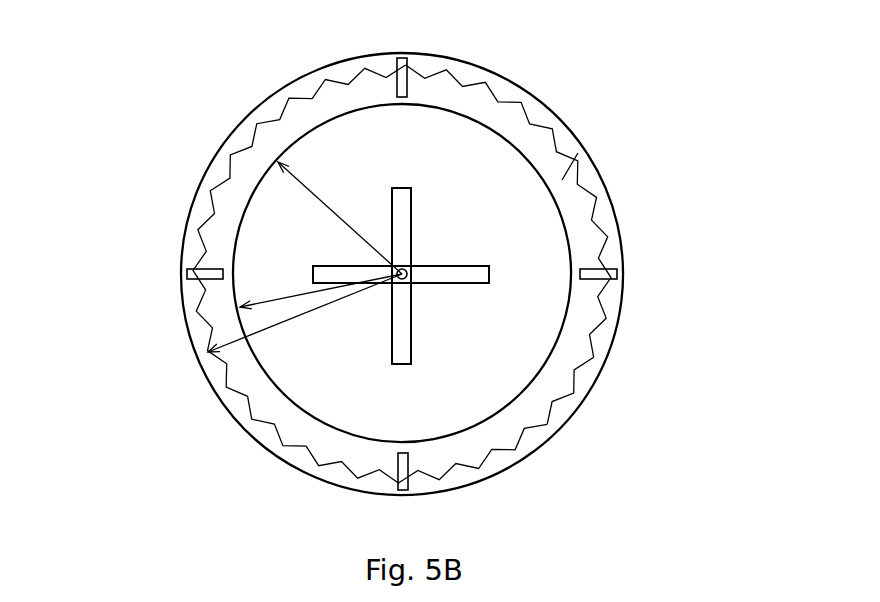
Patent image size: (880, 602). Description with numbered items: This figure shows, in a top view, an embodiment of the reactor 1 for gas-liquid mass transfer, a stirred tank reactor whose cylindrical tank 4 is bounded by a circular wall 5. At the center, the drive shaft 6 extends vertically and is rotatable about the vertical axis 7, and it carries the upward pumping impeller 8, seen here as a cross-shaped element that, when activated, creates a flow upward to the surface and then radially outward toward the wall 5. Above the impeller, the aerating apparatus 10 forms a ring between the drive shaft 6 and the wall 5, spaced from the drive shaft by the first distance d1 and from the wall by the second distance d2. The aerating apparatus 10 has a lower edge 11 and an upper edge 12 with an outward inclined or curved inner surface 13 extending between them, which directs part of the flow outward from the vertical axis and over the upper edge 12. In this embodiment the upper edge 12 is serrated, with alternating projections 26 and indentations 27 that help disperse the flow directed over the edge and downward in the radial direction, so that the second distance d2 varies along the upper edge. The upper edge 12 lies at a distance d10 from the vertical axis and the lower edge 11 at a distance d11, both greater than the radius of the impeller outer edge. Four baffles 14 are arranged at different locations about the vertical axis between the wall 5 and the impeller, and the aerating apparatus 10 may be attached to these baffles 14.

The reactor 1 is at (157, 108).
The tank 4 is at (277, 92).
The wall 5 is at (200, 183).
The drive shaft 6 is at (404, 270).
The vertical axis 7 is at (408, 272).
The upward pumping impeller 8 is at (477, 265).
The aerating apparatus 10 is at (583, 147).
The lower edge 11 is at (360, 435).
The upper edge 12 is at (340, 486).
The inner surface 13 is at (383, 450).
The baffles 14 is at (402, 62).
The projections 26 is at (588, 387).
The indentations 27 is at (612, 333).
The first distance d1 is at (355, 224).
The second distance d2 is at (548, 440).
The distance of upper edge from vertical axis d10 is at (303, 313).
The distance of lower edge from vertical axis d11 is at (321, 283).